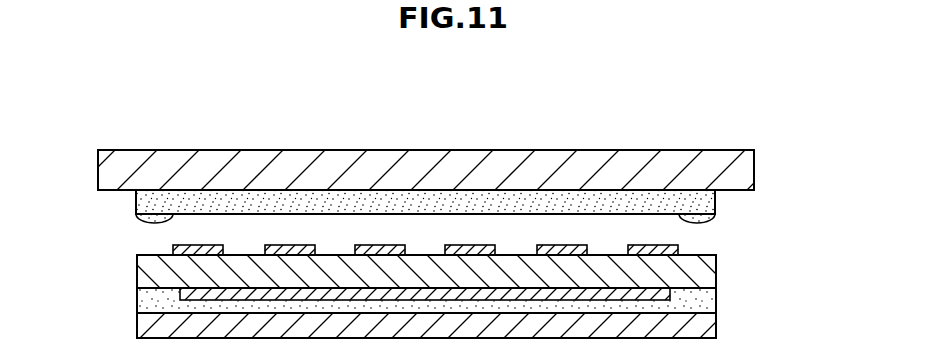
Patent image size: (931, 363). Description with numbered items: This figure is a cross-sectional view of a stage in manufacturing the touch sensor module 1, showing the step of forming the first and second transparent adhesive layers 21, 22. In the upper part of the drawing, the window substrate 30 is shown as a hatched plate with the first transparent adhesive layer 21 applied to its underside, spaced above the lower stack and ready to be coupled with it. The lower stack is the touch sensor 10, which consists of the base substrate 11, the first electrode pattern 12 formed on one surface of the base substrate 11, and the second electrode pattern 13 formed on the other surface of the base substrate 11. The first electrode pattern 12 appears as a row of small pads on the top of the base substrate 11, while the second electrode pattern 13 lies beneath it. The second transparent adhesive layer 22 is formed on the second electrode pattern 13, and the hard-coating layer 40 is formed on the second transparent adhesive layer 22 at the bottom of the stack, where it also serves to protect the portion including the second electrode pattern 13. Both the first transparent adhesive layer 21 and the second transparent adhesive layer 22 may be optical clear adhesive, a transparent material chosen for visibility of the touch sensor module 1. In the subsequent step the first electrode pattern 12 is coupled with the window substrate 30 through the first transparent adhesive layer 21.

The touch sensor module 1 is at (747, 133).
The touch sensor 10 is at (491, 274).
The base substrate 11 is at (703, 270).
The first electrode pattern 12 is at (668, 247).
The second electrode pattern 13 is at (665, 295).
The first transparent adhesive layer 21 is at (708, 202).
The second transparent adhesive layer 22 is at (150, 297).
The window substrate 30 is at (740, 170).
The hard-coating layer 40 is at (706, 325).